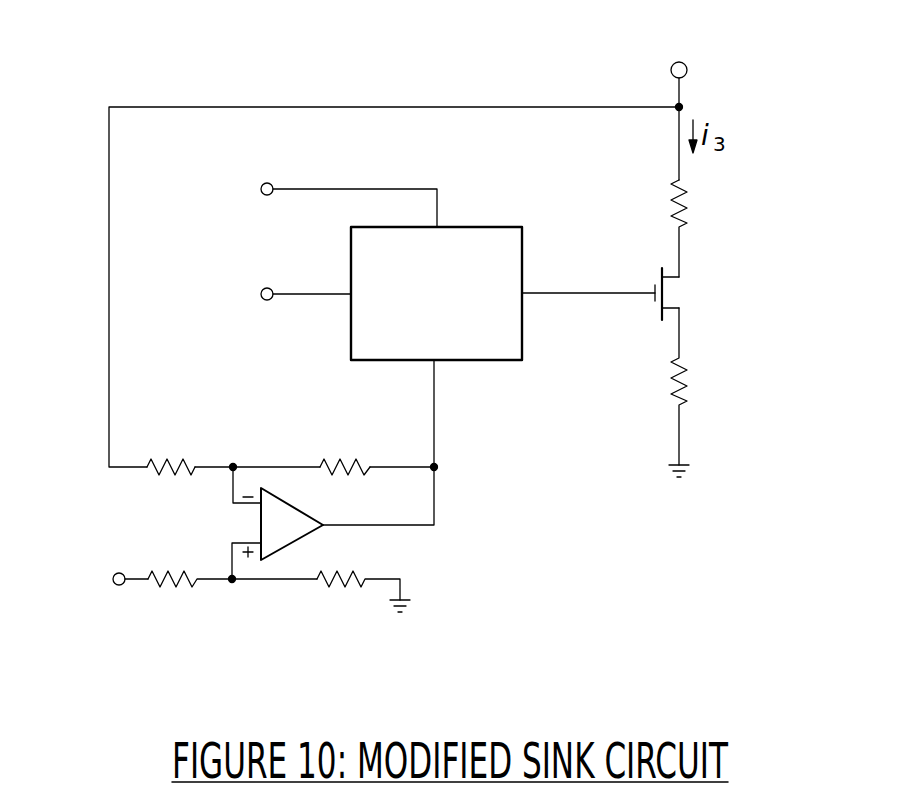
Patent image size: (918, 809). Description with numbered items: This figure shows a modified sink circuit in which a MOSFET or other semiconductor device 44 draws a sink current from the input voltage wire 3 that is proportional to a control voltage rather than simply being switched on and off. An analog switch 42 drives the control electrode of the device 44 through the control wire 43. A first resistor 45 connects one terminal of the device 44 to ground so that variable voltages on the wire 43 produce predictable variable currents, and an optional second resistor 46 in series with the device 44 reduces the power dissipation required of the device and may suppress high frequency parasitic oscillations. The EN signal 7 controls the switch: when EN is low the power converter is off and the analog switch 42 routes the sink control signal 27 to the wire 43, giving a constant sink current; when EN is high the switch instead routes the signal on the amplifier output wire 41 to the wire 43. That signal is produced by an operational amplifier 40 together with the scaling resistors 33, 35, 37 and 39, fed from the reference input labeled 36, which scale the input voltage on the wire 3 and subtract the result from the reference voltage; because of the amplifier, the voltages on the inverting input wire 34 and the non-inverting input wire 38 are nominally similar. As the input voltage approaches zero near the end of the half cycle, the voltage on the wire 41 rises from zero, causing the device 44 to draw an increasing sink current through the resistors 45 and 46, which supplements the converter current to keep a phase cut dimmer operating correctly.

The input voltage wire Vin 3 is at (681, 90).
The EN signal 7 is at (308, 293).
The sink control signal 27 is at (417, 187).
The resistor R2 33 is at (162, 456).
The wire at amplifier inverting input 34 is at (207, 465).
The resistor R3 35 is at (360, 462).
The resistor R4 36 is at (133, 577).
The resistor R4 37 is at (168, 587).
The wire at amplifier non-inverting input 38 is at (280, 582).
The resistor R5 39 is at (345, 568).
The operational amplifier 40 is at (300, 500).
The amplifier output wire 41 is at (437, 488).
The analog switch 42 is at (524, 228).
The control wire 43 is at (566, 293).
The semiconductor device M5 44 is at (675, 283).
The resistor R6 45 is at (684, 359).
The resistor R7 46 is at (684, 181).